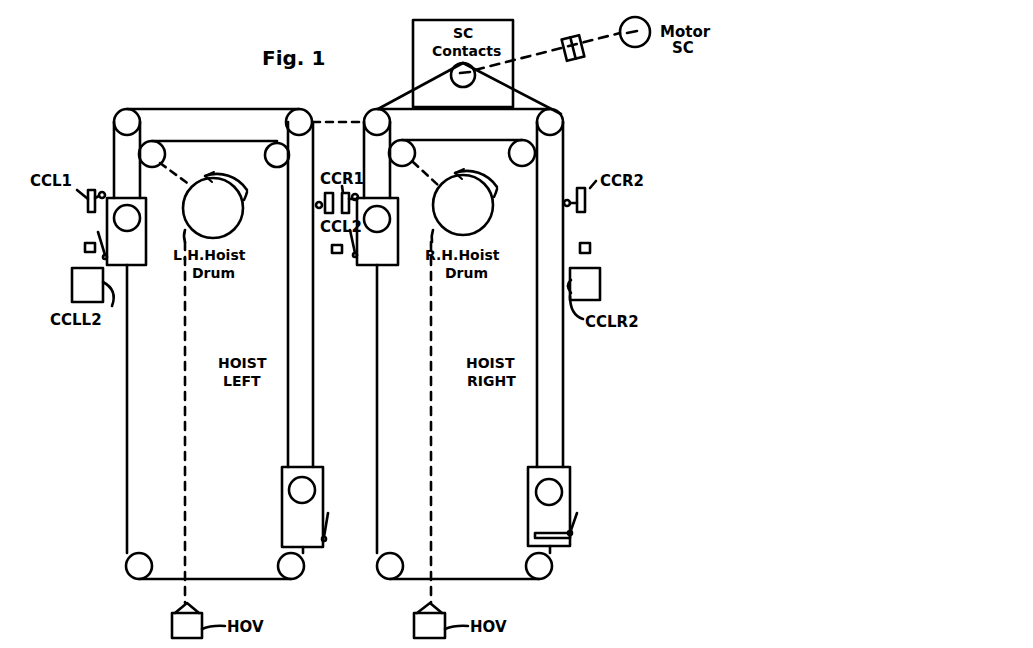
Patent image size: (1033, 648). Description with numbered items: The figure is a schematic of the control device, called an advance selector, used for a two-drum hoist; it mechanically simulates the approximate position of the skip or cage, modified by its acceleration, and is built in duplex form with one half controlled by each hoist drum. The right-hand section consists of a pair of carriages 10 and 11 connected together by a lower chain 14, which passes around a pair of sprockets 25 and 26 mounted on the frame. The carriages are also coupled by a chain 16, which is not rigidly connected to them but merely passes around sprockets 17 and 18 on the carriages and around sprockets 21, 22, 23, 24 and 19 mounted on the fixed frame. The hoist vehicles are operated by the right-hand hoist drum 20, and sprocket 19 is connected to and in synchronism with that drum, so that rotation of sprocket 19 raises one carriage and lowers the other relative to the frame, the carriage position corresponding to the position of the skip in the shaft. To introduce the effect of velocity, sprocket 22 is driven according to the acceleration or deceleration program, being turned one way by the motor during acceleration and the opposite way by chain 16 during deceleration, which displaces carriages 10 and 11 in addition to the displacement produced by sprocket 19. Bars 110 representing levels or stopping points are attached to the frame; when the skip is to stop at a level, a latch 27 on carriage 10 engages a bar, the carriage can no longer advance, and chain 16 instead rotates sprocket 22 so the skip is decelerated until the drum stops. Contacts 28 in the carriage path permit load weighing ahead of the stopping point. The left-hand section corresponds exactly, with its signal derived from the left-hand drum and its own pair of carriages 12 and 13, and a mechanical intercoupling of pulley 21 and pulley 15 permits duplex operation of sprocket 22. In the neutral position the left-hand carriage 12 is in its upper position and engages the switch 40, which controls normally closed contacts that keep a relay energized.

The carriage 10 is at (571, 498).
The carriage 11 is at (363, 266).
The carriage 12 is at (310, 518).
The left hoist fixed block 13 is at (107, 223).
The chain 14 is at (379, 482).
The pulley 15 is at (286, 123).
The chain 16 is at (563, 378).
The sprocket 17 is at (536, 493).
The sprocket 18 is at (390, 220).
The sprocket 19 is at (415, 153).
The hoist drum 20 is at (493, 197).
The sprocket 21 is at (390, 122).
The sprocket 22 is at (453, 86).
The sprocket 23 is at (563, 123).
The sprocket 24 is at (521, 141).
The sprocket 25 is at (526, 560).
The sprocket 26 is at (389, 553).
The latch 27 is at (574, 528).
The contacts 28 is at (600, 283).
The switch 40 is at (90, 190).
The bars 110 is at (591, 248).